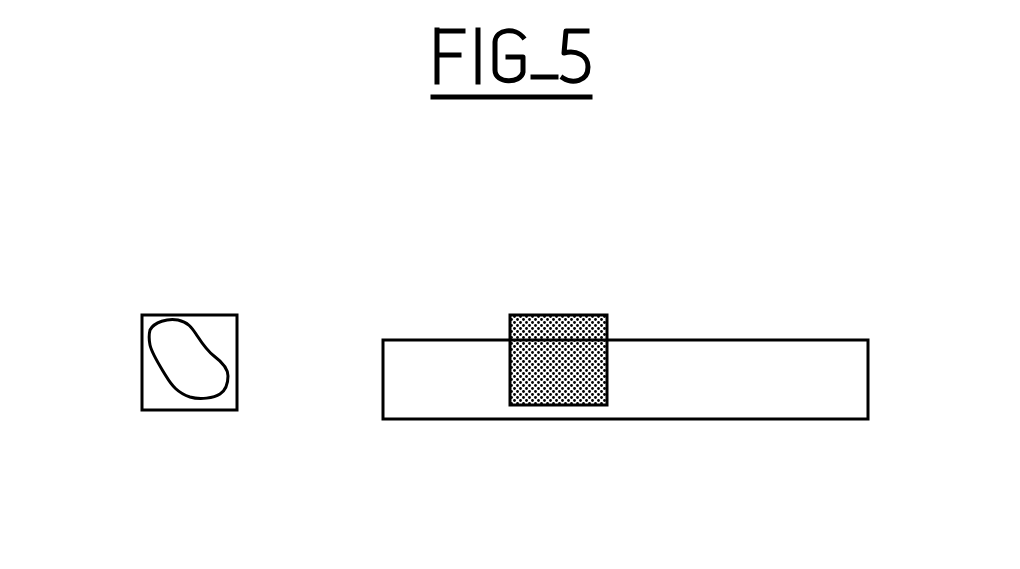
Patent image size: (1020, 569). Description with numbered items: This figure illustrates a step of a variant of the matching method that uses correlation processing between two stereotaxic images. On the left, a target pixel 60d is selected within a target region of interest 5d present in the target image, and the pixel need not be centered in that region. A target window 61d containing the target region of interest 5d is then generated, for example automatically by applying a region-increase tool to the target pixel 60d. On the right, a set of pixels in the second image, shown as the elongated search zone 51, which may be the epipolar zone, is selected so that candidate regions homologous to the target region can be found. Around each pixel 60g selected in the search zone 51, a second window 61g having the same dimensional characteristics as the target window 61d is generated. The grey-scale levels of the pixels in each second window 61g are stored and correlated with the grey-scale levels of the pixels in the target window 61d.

The target region of interest 5d is at (212, 339).
The target pixel 60d is at (170, 328).
The target window 61d is at (128, 387).
The search zone 51 is at (879, 329).
The selected pixel in the search zone 60g is at (540, 322).
The second window 61g is at (614, 318).